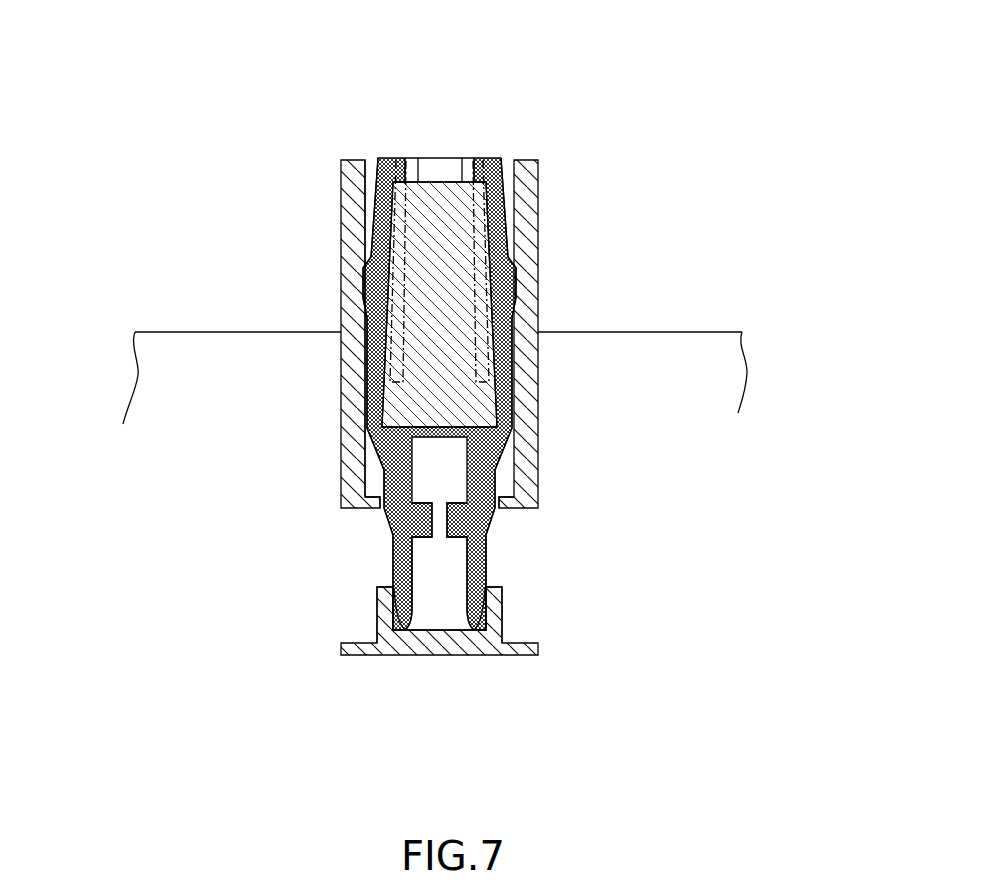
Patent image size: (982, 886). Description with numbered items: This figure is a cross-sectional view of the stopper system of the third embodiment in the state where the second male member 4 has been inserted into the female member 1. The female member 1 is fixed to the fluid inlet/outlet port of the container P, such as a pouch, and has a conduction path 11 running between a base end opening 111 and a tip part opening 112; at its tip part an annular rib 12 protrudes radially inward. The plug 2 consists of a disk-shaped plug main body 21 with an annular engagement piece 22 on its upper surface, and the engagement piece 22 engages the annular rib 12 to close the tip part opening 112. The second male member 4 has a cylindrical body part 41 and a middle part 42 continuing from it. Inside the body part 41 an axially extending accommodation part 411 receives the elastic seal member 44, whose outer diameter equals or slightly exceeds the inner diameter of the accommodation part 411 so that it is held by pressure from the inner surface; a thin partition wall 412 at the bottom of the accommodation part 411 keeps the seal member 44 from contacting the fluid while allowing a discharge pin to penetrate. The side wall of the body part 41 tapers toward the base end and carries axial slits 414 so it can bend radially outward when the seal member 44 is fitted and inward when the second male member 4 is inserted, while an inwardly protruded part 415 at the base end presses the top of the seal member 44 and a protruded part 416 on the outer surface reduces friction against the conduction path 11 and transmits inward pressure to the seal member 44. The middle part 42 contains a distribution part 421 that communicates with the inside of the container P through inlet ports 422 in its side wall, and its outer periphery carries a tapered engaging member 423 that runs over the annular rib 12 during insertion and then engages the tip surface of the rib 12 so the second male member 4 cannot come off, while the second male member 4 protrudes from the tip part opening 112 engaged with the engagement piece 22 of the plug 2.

The female member 1 is at (444, 318).
The conduction path 11 is at (538, 215).
The base end opening 111 is at (368, 170).
The tip part opening 112 is at (376, 508).
The annular rib 12 is at (538, 482).
The plug 2 is at (460, 672).
The plug main body 21 is at (463, 657).
The engagement piece 22 is at (462, 625).
The second male member 4 is at (438, 322).
The body part 41 is at (513, 322).
The accommodation part 411 is at (395, 218).
The partition wall 412 is at (417, 418).
The slits 414 is at (385, 158).
The inwardly protruded part 415 is at (490, 158).
The protruded part 416 is at (363, 283).
The middle part 42 is at (497, 475).
The distribution part 421 is at (423, 565).
The inlet ports 422 is at (422, 537).
The engaging member 423 is at (497, 527).
The seal member 44 is at (367, 328).
The container P is at (672, 332).